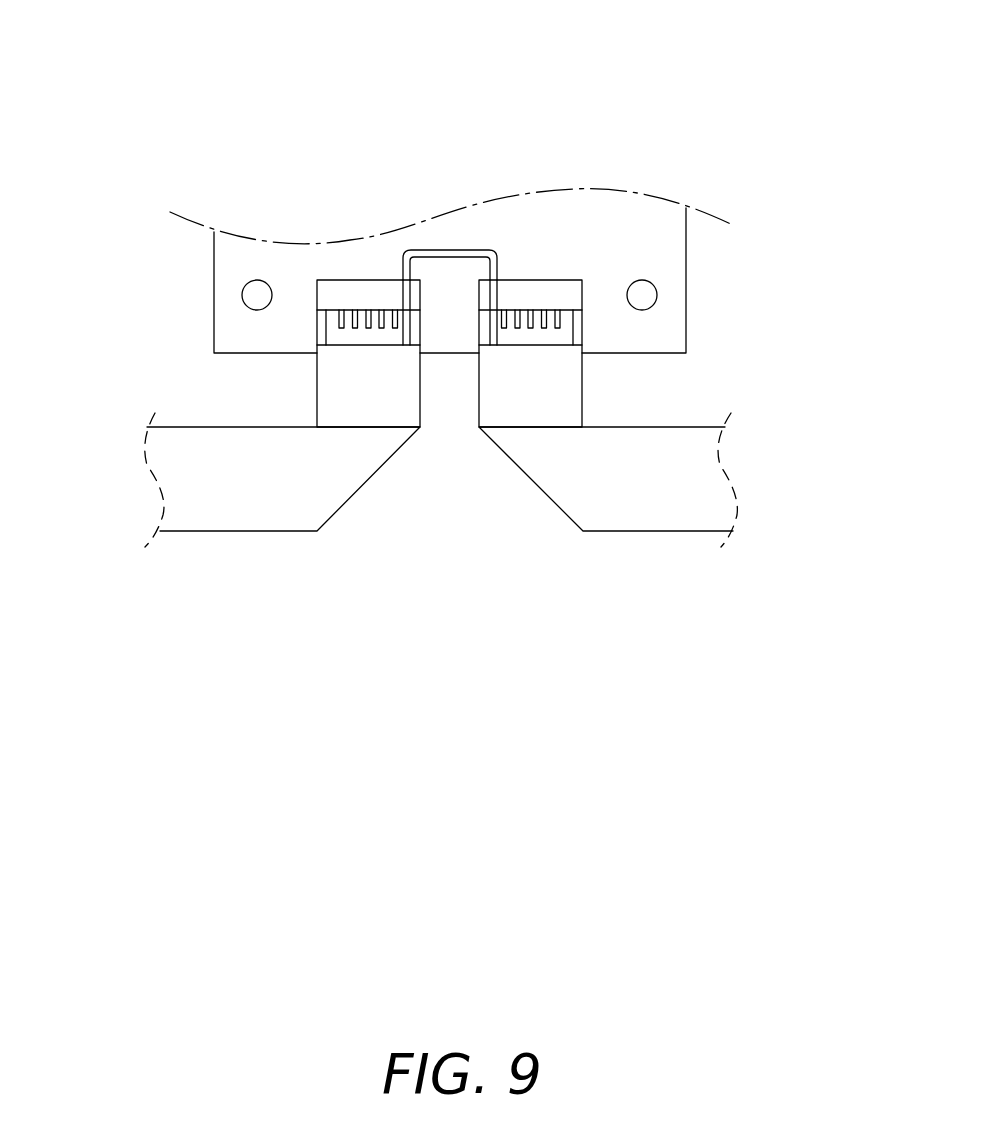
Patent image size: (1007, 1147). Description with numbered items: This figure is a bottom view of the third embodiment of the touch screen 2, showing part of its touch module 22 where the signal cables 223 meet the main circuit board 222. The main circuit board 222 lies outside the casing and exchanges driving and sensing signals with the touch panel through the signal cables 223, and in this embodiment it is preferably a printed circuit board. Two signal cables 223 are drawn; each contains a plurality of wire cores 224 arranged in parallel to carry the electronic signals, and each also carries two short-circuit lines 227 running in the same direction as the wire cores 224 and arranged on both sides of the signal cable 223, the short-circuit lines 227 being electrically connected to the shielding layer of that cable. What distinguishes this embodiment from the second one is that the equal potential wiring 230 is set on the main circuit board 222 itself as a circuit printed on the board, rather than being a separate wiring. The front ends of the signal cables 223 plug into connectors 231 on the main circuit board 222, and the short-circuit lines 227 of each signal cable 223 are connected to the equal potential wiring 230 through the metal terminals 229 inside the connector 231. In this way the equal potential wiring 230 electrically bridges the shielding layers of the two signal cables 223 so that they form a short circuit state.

The touch screen 2 is at (399, 100).
The touch module 22 is at (122, 230).
The main circuit board 222 is at (230, 258).
The signal cables 223 is at (235, 513).
The wire cores 224 is at (393, 318).
The short-circuit lines 227 is at (330, 335).
The metal terminals 229 is at (404, 282).
The equal potential wiring 230 is at (460, 252).
The connector 231 is at (325, 302).